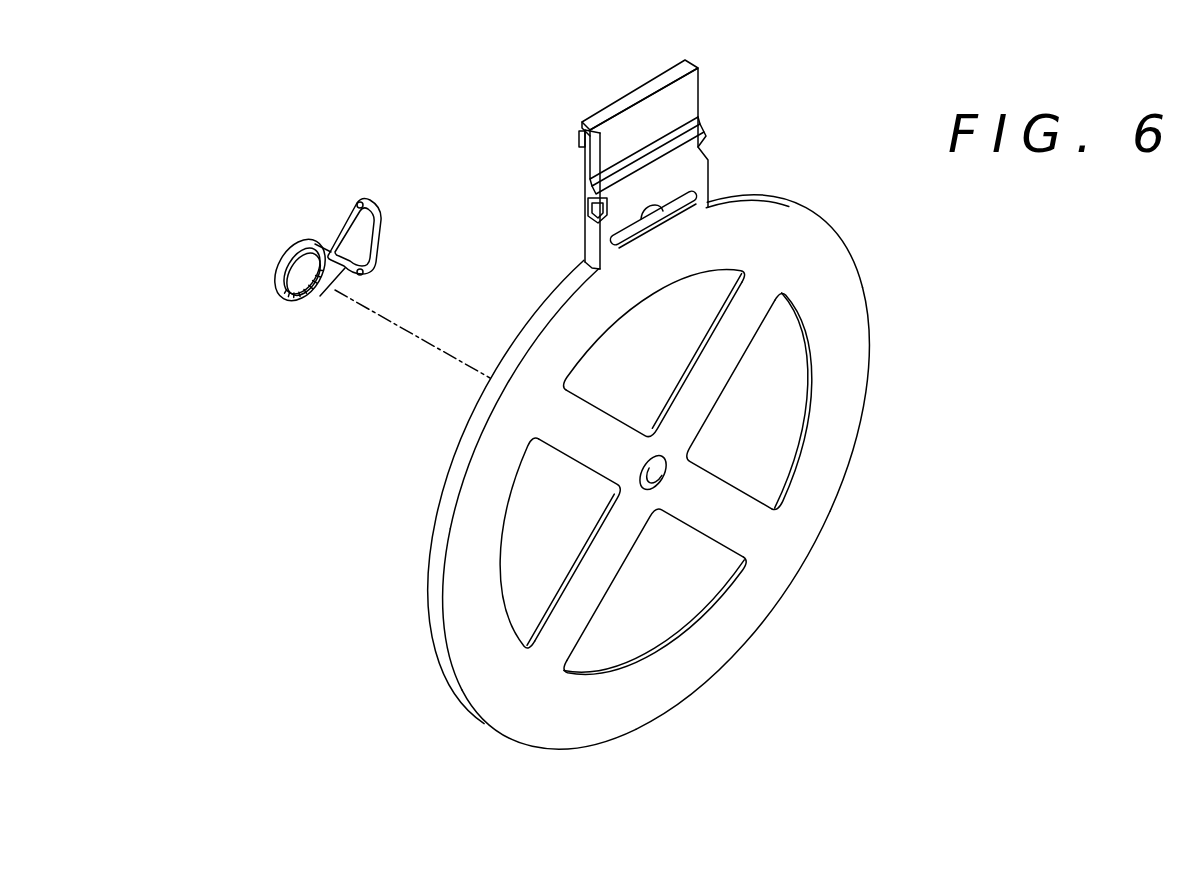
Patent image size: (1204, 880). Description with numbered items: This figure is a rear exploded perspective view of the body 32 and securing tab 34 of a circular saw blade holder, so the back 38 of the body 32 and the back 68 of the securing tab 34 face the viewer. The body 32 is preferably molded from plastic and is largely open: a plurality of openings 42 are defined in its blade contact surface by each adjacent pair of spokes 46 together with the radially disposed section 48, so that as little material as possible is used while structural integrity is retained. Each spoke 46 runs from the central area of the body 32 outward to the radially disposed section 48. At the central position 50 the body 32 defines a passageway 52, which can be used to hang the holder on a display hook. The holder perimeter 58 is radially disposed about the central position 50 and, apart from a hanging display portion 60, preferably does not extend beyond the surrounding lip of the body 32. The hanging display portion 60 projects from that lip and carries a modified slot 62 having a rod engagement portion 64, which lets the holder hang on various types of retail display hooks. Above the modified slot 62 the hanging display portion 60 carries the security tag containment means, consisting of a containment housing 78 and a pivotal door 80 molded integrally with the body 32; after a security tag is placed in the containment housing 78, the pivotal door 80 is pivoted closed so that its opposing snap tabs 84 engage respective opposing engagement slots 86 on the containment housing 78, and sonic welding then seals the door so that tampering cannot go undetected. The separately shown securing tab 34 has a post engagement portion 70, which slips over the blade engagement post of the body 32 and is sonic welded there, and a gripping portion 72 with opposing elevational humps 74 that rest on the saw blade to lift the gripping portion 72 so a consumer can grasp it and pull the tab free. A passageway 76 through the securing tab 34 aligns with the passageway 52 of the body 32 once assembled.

The body 32 is at (942, 287).
The securing tab 34 is at (318, 240).
The back 38 is at (830, 417).
The openings 42 is at (765, 395).
The spokes 46 is at (745, 333).
The radially disposed section 48 is at (543, 700).
The central position 50 is at (668, 485).
The passageway 52 is at (668, 467).
The holder perimeter 58 is at (436, 560).
The hanging display portion 60 is at (586, 190).
The modified slot 62 is at (700, 192).
The rod engagement portion 64 is at (600, 225).
The back 68 is at (363, 273).
The post engagement portion 70 is at (280, 278).
The gripping portion 72 is at (453, 217).
The opposing elevational humps 74 is at (383, 240).
The passageway 76 is at (300, 301).
The containment housing 78 is at (712, 160).
The pivotal door 80 is at (640, 98).
The snap tabs 84 is at (583, 139).
The engagement slots 86 is at (710, 130).